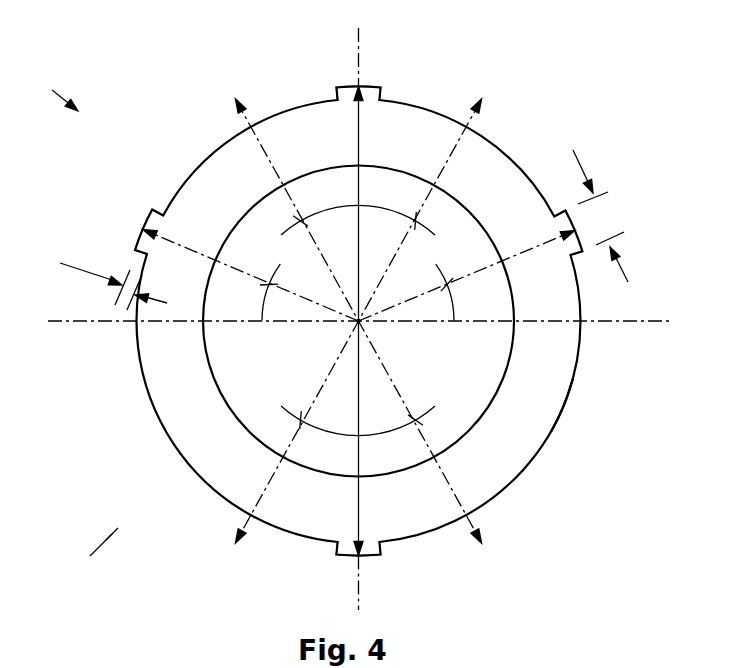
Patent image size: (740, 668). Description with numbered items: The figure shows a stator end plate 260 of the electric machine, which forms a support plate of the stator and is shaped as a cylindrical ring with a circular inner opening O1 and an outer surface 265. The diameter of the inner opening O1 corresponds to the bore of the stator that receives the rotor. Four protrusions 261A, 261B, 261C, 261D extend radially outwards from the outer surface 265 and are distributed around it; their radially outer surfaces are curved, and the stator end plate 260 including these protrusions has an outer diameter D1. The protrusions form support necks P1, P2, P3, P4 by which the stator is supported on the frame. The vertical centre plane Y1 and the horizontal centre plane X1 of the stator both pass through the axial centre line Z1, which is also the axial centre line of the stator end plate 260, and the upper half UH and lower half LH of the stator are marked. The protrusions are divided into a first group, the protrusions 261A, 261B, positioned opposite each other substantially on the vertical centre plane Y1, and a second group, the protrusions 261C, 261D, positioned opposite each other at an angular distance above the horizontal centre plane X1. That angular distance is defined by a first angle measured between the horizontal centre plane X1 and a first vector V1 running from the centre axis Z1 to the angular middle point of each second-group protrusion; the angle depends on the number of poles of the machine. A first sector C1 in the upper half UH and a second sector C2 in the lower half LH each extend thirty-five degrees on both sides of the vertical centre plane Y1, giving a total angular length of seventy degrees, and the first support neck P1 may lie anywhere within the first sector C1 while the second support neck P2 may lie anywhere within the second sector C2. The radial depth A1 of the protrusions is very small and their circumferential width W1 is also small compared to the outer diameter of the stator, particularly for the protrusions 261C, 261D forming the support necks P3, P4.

The stator end plate 260 is at (493, 163).
The protrusion 261A is at (344, 86).
The protrusion 261B is at (346, 556).
The protrusion 261C is at (151, 230).
The protrusion 261D is at (590, 223).
The outer surface 265 is at (567, 421).
The inner opening O1 is at (221, 392).
The horizontal centre plane X1 is at (359, 321).
The vertical centre plane Y1 is at (375, 319).
The outer diameter D1 is at (373, 321).
The first vector V1 is at (182, 246).
The first sector C1 is at (358, 206).
The second sector C2 is at (358, 432).
The axial centre line Z1 is at (352, 326).
The first support neck P1 is at (392, 97).
The second support neck P2 is at (392, 547).
The support neck P3 is at (166, 192).
The support neck P4 is at (586, 266).
The width W1 is at (600, 212).
The depth A1 is at (113, 276).
The upper half UH is at (54, 84).
The lower half LH is at (84, 553).